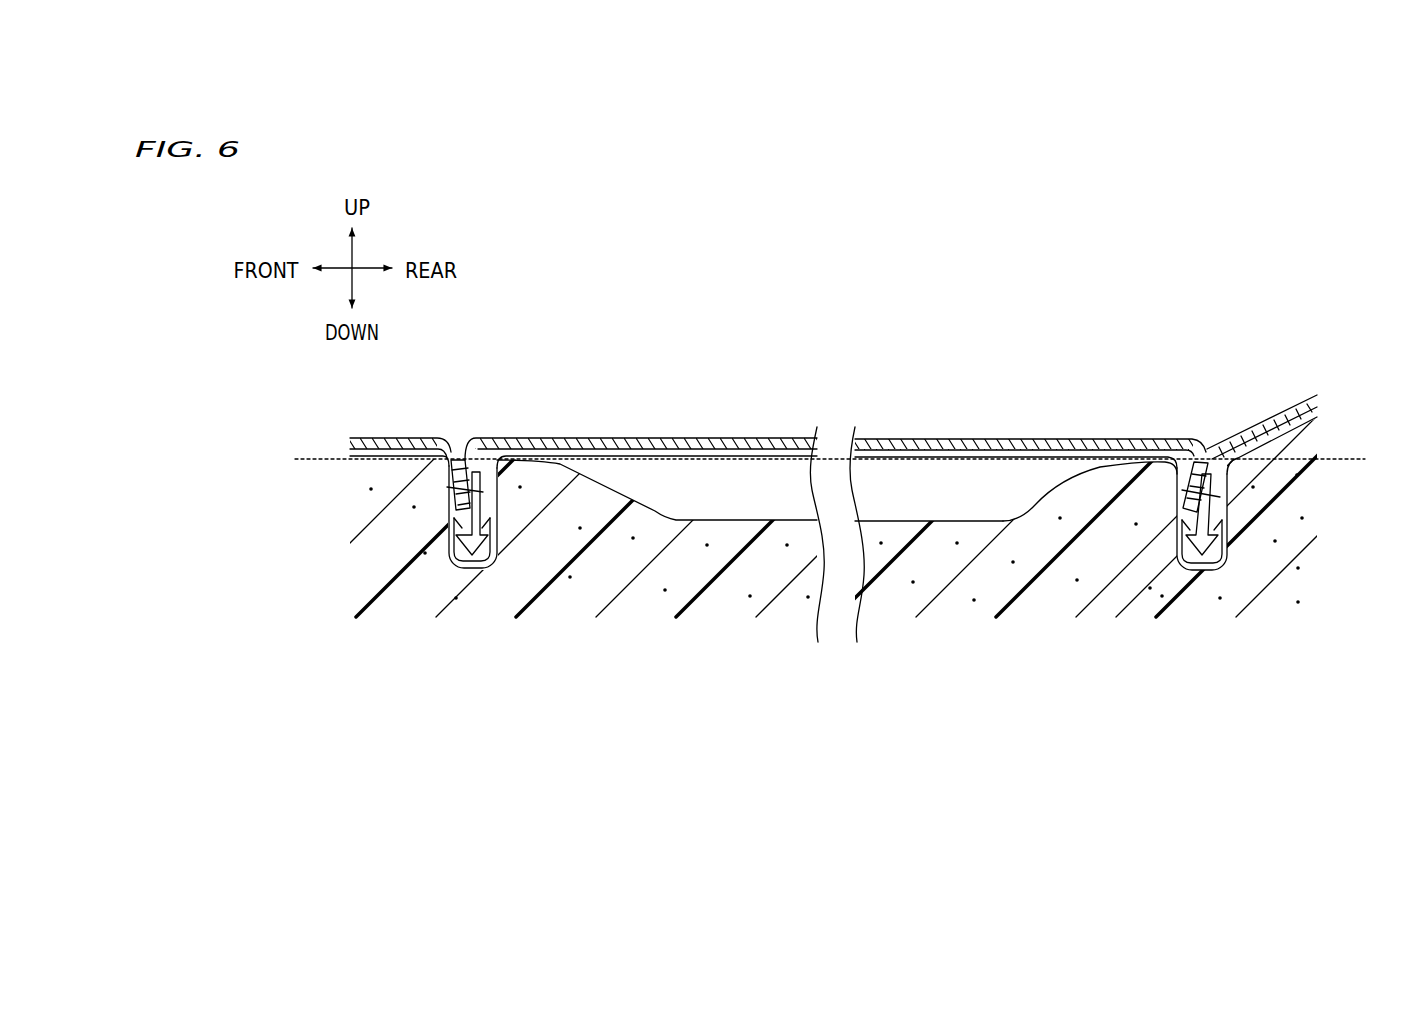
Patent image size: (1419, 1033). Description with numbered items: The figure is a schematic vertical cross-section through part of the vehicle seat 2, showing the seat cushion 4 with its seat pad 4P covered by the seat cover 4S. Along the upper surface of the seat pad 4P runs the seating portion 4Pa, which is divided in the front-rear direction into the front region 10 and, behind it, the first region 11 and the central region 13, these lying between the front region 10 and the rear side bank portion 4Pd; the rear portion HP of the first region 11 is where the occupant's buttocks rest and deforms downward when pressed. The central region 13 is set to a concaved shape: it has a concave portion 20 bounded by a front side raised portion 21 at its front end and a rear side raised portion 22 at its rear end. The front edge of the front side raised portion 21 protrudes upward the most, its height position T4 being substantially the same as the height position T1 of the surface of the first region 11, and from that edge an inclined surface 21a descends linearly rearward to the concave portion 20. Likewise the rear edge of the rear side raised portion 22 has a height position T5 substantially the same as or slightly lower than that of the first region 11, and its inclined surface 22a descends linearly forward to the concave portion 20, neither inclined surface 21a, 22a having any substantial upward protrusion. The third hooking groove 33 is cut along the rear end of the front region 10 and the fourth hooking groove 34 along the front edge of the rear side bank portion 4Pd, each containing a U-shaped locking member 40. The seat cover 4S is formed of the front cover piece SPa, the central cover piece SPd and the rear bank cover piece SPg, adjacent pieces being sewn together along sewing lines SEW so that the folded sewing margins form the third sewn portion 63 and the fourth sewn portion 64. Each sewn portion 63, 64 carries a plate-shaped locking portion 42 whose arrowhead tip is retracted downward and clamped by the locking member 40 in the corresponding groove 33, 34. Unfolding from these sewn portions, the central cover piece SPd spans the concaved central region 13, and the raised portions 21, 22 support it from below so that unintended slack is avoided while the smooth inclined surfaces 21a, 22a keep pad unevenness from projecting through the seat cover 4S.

The seat cushion 4 is at (844, 387).
The vehicle seat 2 is at (844, 387).
The seat cover 4S is at (777, 410).
The seat pad 4P is at (833, 414).
The front cover piece SPa is at (777, 410).
The central cover piece SPd is at (380, 438).
The rear bank cover piece SPg is at (1306, 397).
The rear portion of the first/second region HP is at (905, 452).
The first region 11 is at (403, 456).
The central region 13 is at (847, 551).
The concave portion 20 is at (1006, 523).
The front side raised portion 21 is at (657, 540).
The rear side raised portion 22 is at (1090, 560).
The inclined surface 21a is at (622, 474).
The inclined surface 22a is at (1062, 475).
The front region 10 is at (448, 570).
The third hooking groove 33 is at (390, 473).
The fourth hooking groove 34 is at (1264, 474).
The locking member 40 is at (458, 550).
The locking portion 42 is at (488, 503).
The third sewn portion 63 is at (448, 522).
The fourth sewn portion 64 is at (1222, 512).
The sewing line SEW is at (466, 460).
The height position of front edge part T4 is at (813, 460).
The height position of first region surface T1 is at (813, 460).
The height position of rear edge part T5 is at (813, 460).
The seating portion 4Pa is at (350, 736).
The rear side bank portion 4Pd is at (1227, 570).